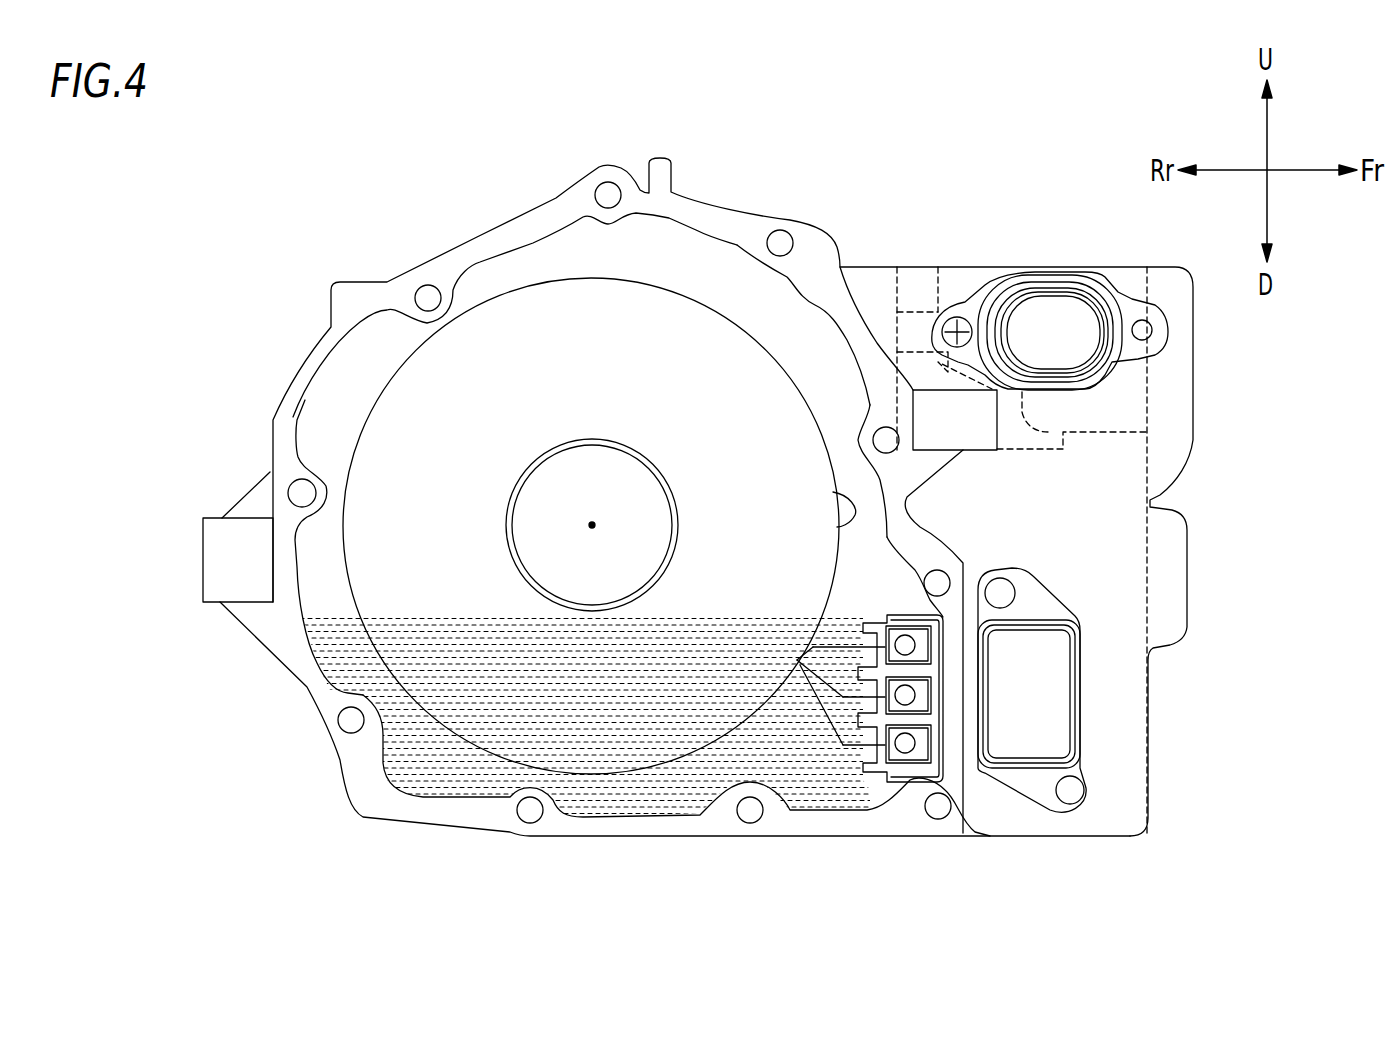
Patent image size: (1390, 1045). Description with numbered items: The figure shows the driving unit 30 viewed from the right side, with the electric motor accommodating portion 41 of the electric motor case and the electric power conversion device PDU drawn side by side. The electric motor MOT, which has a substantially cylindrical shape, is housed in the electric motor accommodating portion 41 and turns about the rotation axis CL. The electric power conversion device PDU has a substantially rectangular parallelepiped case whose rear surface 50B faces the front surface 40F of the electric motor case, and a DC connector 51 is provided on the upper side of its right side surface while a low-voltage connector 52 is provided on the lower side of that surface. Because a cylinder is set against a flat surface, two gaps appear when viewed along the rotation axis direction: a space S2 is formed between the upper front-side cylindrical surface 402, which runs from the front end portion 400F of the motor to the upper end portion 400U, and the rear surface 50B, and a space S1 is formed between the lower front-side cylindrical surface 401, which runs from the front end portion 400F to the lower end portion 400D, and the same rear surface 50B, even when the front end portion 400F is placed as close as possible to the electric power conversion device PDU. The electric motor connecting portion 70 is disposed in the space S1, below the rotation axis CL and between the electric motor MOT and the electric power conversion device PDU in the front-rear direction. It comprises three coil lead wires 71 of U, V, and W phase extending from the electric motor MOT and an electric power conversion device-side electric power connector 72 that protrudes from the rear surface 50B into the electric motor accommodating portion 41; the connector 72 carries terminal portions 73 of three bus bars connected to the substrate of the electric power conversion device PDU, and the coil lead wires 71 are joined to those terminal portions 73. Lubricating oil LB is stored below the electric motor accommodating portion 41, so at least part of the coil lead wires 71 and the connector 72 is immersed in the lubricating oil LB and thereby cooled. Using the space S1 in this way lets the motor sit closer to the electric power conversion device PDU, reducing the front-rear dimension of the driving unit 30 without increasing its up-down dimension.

The driving unit 30 is at (927, 187).
The electric power conversion device PDU is at (1127, 538).
The front surface of the electric motor case 40F is at (967, 687).
The electric motor MOT is at (383, 390).
The upper front-side cylindrical surface 402 is at (705, 307).
The rotation axis CL is at (594, 523).
The upper end portion 400U is at (588, 262).
The space S2 is at (833, 333).
The front end portion 400F is at (833, 492).
The electric motor accommodating portion 41 is at (310, 587).
The lower end portion 400D is at (590, 776).
The lubricating oil LB is at (447, 785).
The lower front-side cylindrical surface 401 is at (790, 705).
The space S1 is at (790, 710).
The electric motor connecting portion 70 is at (871, 774).
The coil lead wires 71 is at (828, 652).
The electric power conversion device-side electric power connector 72 is at (910, 770).
The terminal portions 73 is at (922, 655).
The DC connector 51 is at (1053, 310).
The low-voltage connector 52 is at (1057, 720).
The rear surface 50B is at (962, 667).